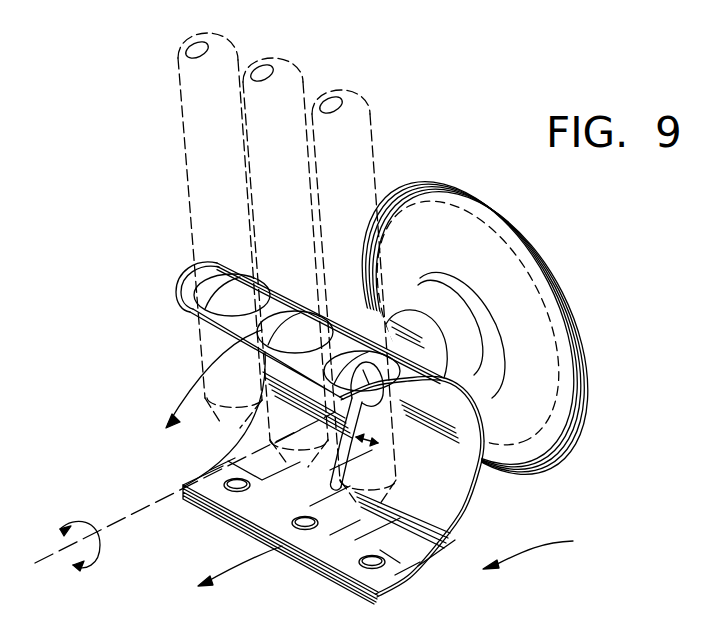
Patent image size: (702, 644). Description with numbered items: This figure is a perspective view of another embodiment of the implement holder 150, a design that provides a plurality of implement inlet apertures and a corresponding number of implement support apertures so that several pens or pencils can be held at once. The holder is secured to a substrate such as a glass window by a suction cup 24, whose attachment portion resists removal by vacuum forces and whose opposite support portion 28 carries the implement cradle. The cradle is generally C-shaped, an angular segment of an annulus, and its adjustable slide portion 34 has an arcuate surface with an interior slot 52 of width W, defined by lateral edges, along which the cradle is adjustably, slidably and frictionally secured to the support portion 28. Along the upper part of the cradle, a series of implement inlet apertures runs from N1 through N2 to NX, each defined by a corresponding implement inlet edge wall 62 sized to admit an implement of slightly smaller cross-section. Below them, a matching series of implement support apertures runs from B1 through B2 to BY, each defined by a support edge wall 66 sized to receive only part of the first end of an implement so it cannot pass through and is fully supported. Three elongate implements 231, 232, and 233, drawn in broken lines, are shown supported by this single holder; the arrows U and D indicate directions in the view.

The suction cup 24 is at (537, 313).
The support portion 28 is at (423, 340).
The adjustable slide portion 34 is at (449, 528).
The interior slot 52 is at (380, 460).
The implement inlet edge wall 62 is at (230, 268).
The implement support edge wall 66 is at (237, 480).
The implement holder 150 is at (550, 550).
The elongate implement 233 is at (238, 57).
The elongate implement 232 is at (303, 90).
The elongate implement 231 is at (370, 118).
The first implement inlet aperture in the series N1 is at (197, 320).
The second implement inlet aperture in the series N2 is at (256, 338).
The last implement inlet aperture in the series NX is at (460, 383).
The first implement support aperture in the series B1 is at (237, 492).
The second implement support aperture in the series B2 is at (303, 530).
The last implement support aperture in the series BY is at (372, 568).
The direction arrow U is at (190, 392).
The direction arrow D is at (245, 562).